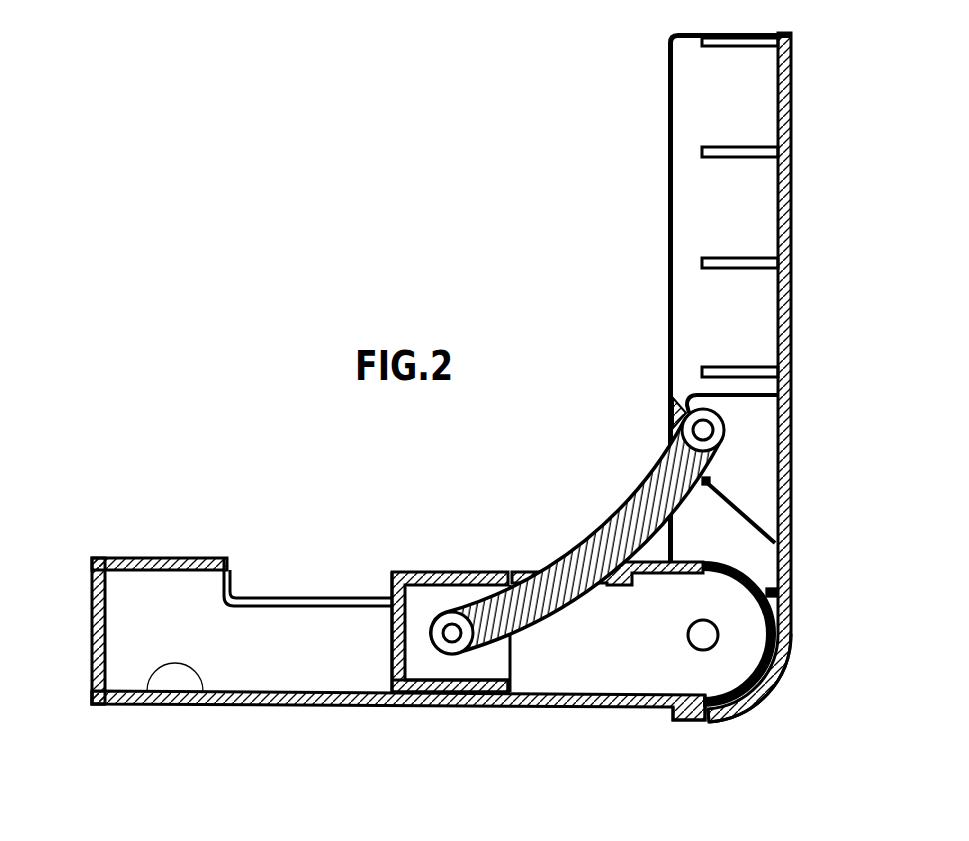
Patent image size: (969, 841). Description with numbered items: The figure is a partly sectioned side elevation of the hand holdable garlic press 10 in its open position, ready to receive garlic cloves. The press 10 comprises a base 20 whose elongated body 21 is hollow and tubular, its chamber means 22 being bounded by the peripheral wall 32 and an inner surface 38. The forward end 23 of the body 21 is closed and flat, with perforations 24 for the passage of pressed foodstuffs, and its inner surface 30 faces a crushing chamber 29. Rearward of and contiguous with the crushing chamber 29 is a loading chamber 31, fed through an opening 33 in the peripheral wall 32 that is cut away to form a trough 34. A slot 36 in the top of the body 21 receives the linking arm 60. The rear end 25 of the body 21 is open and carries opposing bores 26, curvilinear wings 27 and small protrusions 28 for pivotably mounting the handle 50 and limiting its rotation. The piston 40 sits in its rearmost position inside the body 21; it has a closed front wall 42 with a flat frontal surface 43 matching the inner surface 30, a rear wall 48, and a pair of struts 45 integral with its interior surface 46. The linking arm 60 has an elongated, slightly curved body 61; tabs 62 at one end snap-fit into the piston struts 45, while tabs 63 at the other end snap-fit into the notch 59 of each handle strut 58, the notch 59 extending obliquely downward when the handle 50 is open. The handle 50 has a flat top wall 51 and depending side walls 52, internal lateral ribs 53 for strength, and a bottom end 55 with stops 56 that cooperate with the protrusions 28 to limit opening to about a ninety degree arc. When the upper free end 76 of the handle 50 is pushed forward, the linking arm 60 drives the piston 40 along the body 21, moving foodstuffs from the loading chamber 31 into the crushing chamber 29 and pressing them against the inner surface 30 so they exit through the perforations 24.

The garlic press 10 is at (543, 326).
The base 20 is at (623, 665).
The elongated body 21 is at (273, 670).
The chamber means 22 is at (262, 590).
The forward end 23 is at (108, 593).
The perforations 24 is at (92, 663).
The rear end 25 is at (757, 702).
The bores 26 is at (718, 643).
The curvilinear wings 27 is at (739, 564).
The protrusions 28 is at (686, 722).
The crushing chamber 29 is at (163, 605).
The inner surface 30 is at (102, 703).
The loading chamber 31 is at (273, 637).
The peripheral wall 32 is at (190, 651).
The opening 33 is at (335, 590).
The trough 34 is at (232, 575).
The slot 36 is at (528, 572).
The inner surface 38 is at (103, 647).
The piston 40 is at (415, 594).
The front wall 42 is at (390, 678).
The frontal surface 43 is at (390, 632).
The struts 45 is at (485, 573).
The interior surface 46 is at (470, 604).
The rear wall 48 is at (512, 663).
The handle 50 is at (715, 140).
The top wall 51 is at (790, 100).
The side walls 52 is at (702, 70).
The lateral ribs 53 is at (672, 262).
The bottom end 55 is at (748, 712).
The stops 56 is at (714, 718).
The struts 58 is at (764, 408).
The notch 59 is at (686, 406).
The linking arm 60 is at (673, 463).
The elongated body 61 is at (583, 568).
The tabs 62 is at (458, 645).
The tabs 63 is at (708, 432).
The upper free end 76 is at (760, 80).